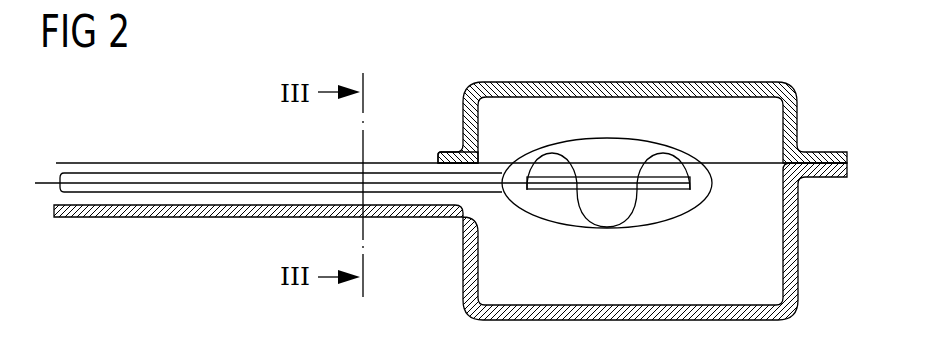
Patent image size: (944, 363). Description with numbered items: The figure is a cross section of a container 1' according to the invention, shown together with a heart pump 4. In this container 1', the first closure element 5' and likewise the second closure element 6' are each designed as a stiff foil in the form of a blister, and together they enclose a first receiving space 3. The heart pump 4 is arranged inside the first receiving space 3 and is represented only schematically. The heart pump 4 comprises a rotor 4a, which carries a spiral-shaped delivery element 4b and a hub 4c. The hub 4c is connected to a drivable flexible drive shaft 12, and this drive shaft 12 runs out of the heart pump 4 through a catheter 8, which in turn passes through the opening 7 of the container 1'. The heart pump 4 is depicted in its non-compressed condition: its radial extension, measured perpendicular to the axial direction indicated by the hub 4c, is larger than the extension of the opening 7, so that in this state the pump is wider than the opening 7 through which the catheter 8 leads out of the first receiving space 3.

The container 1' is at (471, 172).
The first receiving space 3 is at (739, 172).
The heart pump 4 is at (614, 199).
The rotor 4a is at (563, 211).
The spiral-shaped delivery element 4b is at (637, 197).
The hub 4c is at (603, 185).
The first closure element 5' is at (454, 241).
The second closure element 6' is at (642, 94).
The opening 7 is at (446, 171).
The catheter 8 is at (212, 172).
The drive shaft 12 is at (130, 184).